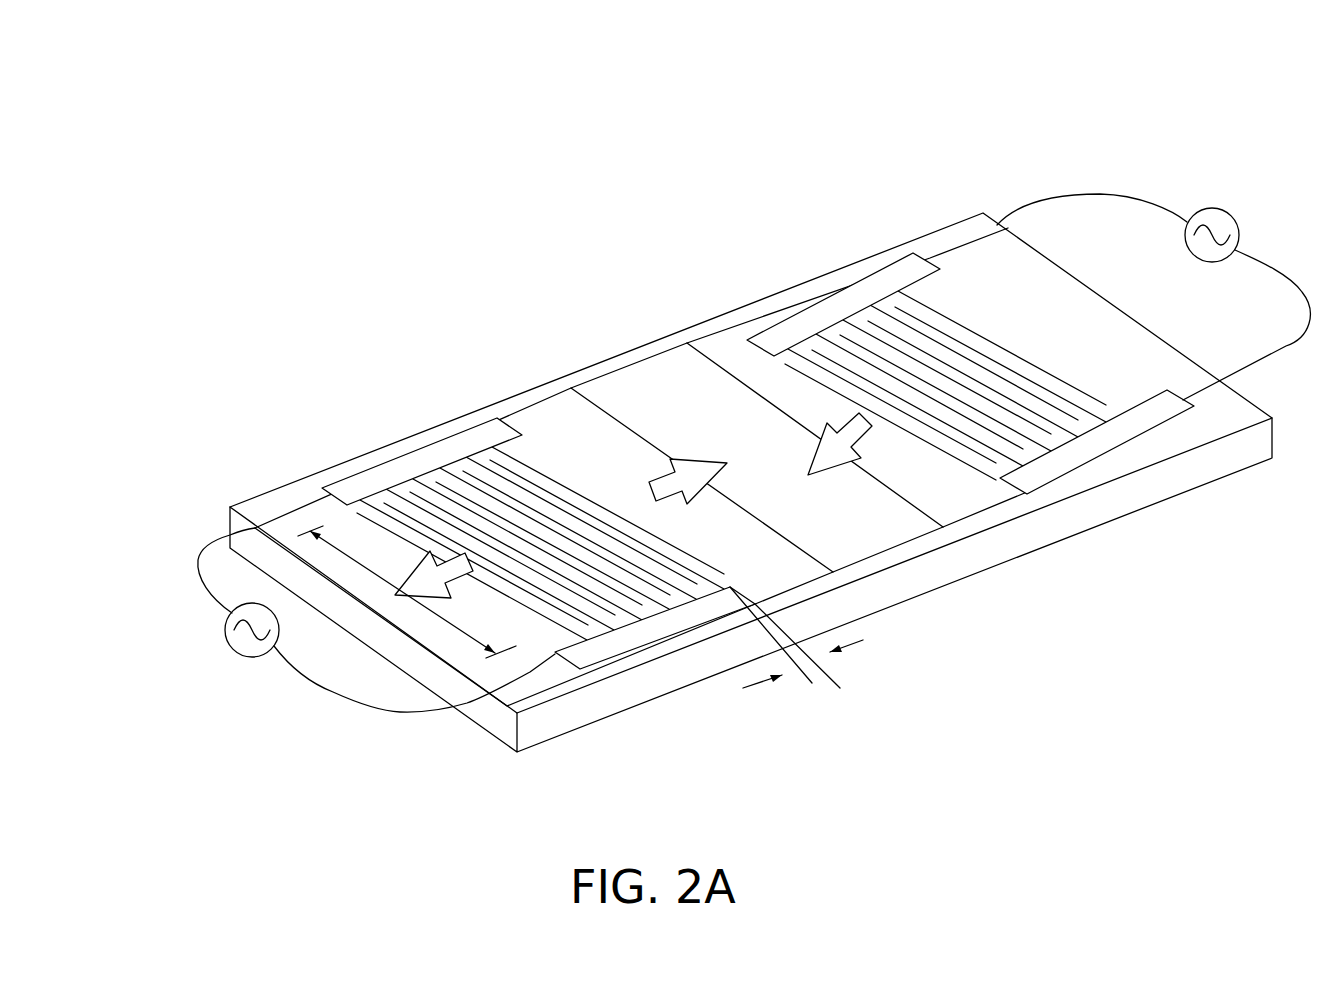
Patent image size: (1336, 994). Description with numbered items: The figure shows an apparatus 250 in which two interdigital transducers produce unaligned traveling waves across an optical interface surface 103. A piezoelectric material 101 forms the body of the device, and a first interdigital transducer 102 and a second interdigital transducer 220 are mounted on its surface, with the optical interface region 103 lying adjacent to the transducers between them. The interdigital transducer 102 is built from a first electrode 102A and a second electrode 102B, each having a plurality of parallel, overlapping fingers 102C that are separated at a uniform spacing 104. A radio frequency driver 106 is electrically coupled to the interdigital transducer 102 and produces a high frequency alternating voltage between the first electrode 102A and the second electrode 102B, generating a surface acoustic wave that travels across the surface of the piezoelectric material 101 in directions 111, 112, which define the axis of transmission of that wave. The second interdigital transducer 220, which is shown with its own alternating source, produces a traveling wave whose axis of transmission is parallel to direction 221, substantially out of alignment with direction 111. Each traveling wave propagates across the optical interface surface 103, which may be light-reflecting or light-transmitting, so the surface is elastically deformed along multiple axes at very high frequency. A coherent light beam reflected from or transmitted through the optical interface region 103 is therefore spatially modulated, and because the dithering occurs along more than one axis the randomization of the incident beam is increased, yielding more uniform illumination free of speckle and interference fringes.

The piezoelectric material 101 is at (390, 645).
The interdigital transducer 102 is at (291, 430).
The first electrode 102A is at (417, 460).
The second electrode 102B is at (757, 594).
The fingers 102C is at (575, 432).
The optical interface region 103 is at (680, 362).
The uniform spacing 104 is at (823, 668).
The radio frequency driver 106 is at (226, 648).
The direction 111 is at (690, 462).
The direction 112 is at (455, 582).
The interdigital transducer 220 is at (1019, 182).
The direction 221 is at (828, 428).
The apparatus 250 is at (480, 220).